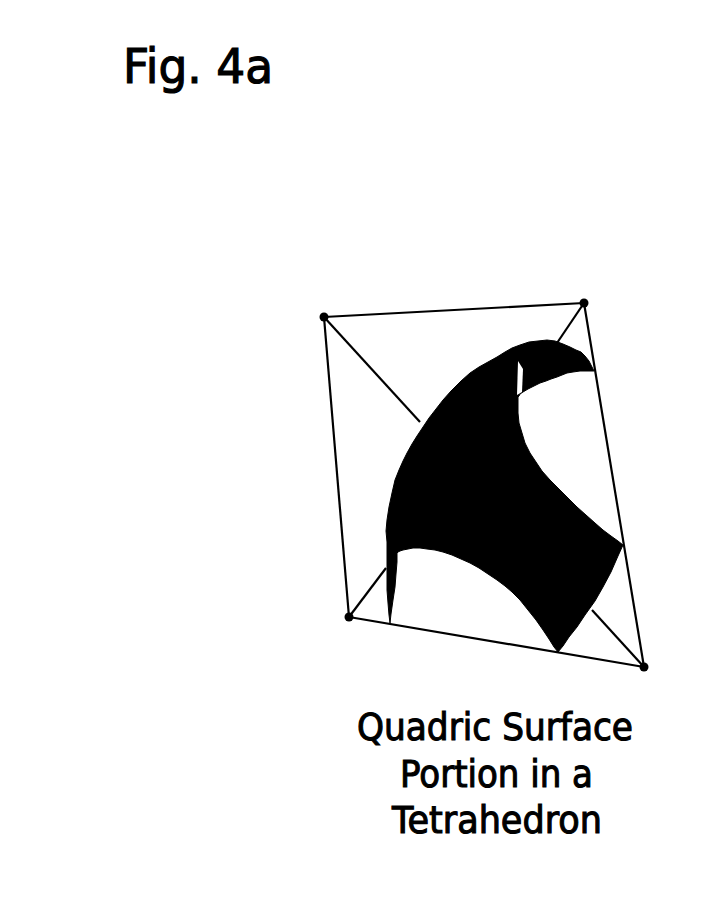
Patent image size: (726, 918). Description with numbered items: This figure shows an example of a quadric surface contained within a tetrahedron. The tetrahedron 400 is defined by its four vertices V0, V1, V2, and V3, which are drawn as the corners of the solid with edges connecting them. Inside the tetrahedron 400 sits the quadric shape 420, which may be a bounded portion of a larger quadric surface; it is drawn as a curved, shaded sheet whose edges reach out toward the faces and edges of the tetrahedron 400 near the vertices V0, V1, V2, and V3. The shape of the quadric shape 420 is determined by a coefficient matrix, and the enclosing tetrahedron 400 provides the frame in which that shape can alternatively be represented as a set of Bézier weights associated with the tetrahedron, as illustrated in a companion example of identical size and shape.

The tetrahedron 400 is at (245, 244).
The quadric shape 420 is at (387, 566).
The vertex V0 is at (306, 298).
The vertex V1 is at (332, 637).
The vertex V2 is at (661, 691).
The vertex V3 is at (601, 284).